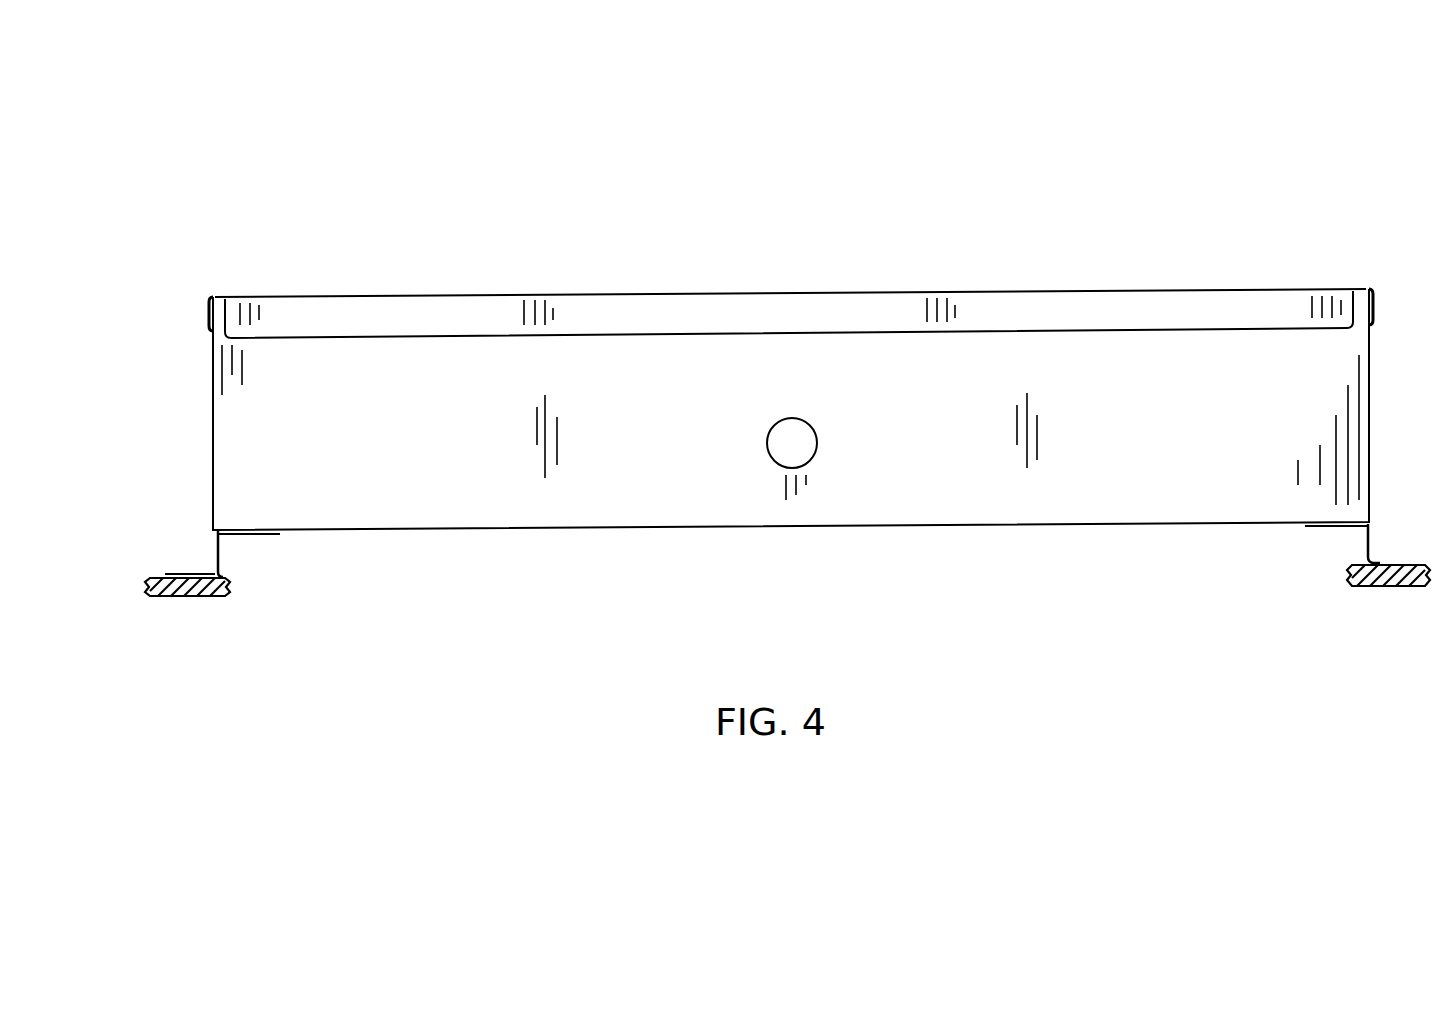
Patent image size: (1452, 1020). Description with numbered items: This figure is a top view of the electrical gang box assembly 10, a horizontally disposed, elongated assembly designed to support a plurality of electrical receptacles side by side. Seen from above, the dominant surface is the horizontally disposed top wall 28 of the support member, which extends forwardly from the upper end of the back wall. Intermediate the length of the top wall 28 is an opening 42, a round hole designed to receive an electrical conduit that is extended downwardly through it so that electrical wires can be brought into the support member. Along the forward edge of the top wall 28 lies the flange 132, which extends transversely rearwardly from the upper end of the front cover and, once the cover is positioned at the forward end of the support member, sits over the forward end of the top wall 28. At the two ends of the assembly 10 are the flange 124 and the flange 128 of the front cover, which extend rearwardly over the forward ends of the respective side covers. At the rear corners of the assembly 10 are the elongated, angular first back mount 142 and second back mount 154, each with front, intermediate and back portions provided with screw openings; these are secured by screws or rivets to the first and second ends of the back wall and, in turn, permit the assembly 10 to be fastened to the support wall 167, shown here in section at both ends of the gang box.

The electrical gang box assembly 10 is at (793, 388).
The top wall 28 is at (1083, 352).
The flange 132 is at (690, 310).
The flange 124 is at (210, 322).
The flange 128 is at (1372, 296).
The opening 42 is at (805, 453).
The first back mount 142 is at (250, 563).
The second back mount 154 is at (1341, 545).
The support wall 167 is at (202, 600).